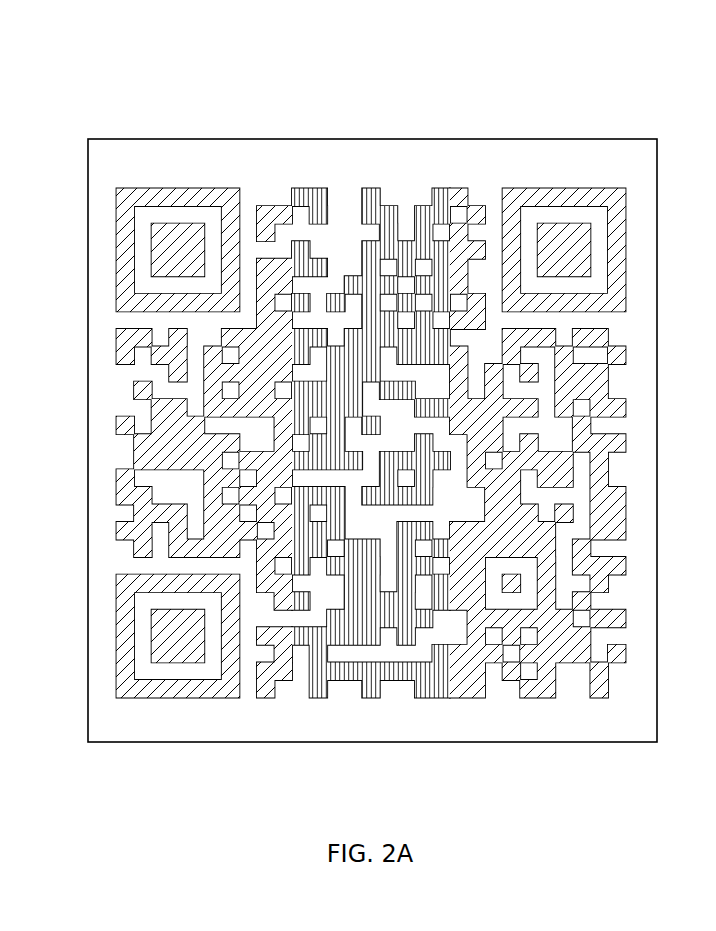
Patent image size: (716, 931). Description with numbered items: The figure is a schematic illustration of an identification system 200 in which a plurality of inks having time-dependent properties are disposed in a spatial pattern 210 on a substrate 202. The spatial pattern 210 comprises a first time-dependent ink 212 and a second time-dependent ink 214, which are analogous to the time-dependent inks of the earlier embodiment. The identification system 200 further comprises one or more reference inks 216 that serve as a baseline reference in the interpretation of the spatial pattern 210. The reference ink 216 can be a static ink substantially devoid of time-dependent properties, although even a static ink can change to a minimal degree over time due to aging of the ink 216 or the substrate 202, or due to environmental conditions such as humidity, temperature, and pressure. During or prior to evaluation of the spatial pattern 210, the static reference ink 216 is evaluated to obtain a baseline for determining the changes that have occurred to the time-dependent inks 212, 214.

The identification system 200 is at (305, 98).
The substrate 202 is at (177, 712).
The spatial pattern 210 is at (382, 431).
The first time-dependent ink 212 is at (378, 187).
The second time-dependent ink 214 is at (630, 504).
The reference ink 216 is at (128, 413).